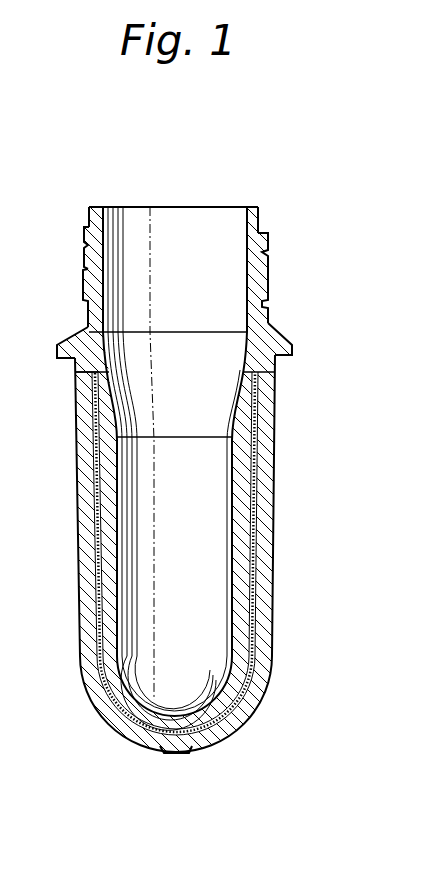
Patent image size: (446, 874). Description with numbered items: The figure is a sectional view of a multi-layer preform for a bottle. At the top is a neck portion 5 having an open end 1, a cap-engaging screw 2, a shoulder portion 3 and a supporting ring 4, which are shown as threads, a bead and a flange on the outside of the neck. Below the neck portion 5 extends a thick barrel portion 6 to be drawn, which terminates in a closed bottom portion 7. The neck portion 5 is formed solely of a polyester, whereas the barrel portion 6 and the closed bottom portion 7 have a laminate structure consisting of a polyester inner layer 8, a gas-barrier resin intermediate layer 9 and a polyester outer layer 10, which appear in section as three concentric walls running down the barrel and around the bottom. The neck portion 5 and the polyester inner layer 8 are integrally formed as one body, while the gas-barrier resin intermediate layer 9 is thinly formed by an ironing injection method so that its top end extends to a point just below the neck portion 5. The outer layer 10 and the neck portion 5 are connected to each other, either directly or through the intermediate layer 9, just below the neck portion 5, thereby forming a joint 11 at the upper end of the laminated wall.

The open end 1 is at (256, 207).
The cap-engaging screw 2 is at (84, 247).
The shoulder portion 3 is at (262, 304).
The supporting ring 4 is at (292, 352).
The neck portion 5 is at (345, 205).
The barrel portion 6 is at (290, 502).
The closed bottom portion 7 is at (196, 759).
The polyester inner layer 8 is at (110, 577).
The gas-barrier resin intermediate layer 9 is at (102, 623).
The polyester outer layer 10 is at (106, 693).
The joint 11 is at (80, 381).